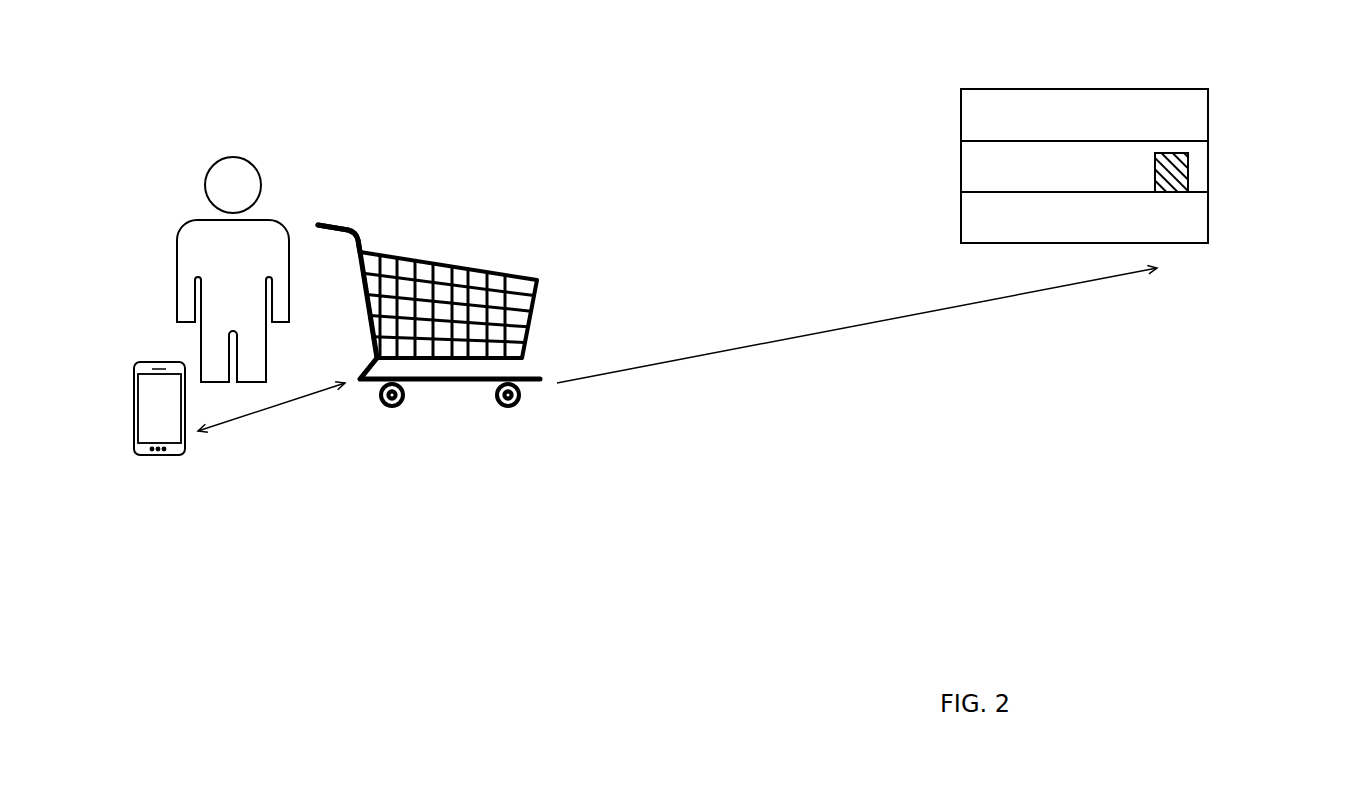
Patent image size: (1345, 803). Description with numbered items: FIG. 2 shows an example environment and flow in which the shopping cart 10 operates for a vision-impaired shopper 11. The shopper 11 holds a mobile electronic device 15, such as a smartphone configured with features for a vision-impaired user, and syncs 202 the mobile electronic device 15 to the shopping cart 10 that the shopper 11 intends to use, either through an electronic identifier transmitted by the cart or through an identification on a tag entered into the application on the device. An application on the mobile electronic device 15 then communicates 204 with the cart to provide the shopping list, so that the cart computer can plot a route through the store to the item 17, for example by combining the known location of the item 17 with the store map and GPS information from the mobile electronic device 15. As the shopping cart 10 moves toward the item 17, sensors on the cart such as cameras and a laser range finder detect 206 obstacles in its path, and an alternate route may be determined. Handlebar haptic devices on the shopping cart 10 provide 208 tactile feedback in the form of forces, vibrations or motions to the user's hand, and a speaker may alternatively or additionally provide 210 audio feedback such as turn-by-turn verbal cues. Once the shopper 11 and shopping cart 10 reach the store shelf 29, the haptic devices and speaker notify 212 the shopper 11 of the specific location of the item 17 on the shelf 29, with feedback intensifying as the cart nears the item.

The vision-impaired shopper 11 is at (212, 160).
The mobile electronic device 15 is at (152, 359).
The communicating step 204 is at (167, 467).
The shopping cart 10 is at (520, 263).
The tactile feedback providing step 208 is at (328, 220).
The audio feedback providing step 210 is at (339, 238).
The syncing step 202 is at (290, 407).
The obstacle detecting step 206 is at (808, 338).
The notifying step 212 is at (1218, 220).
The store shelf 29 is at (1037, 110).
The item 17 is at (1188, 163).